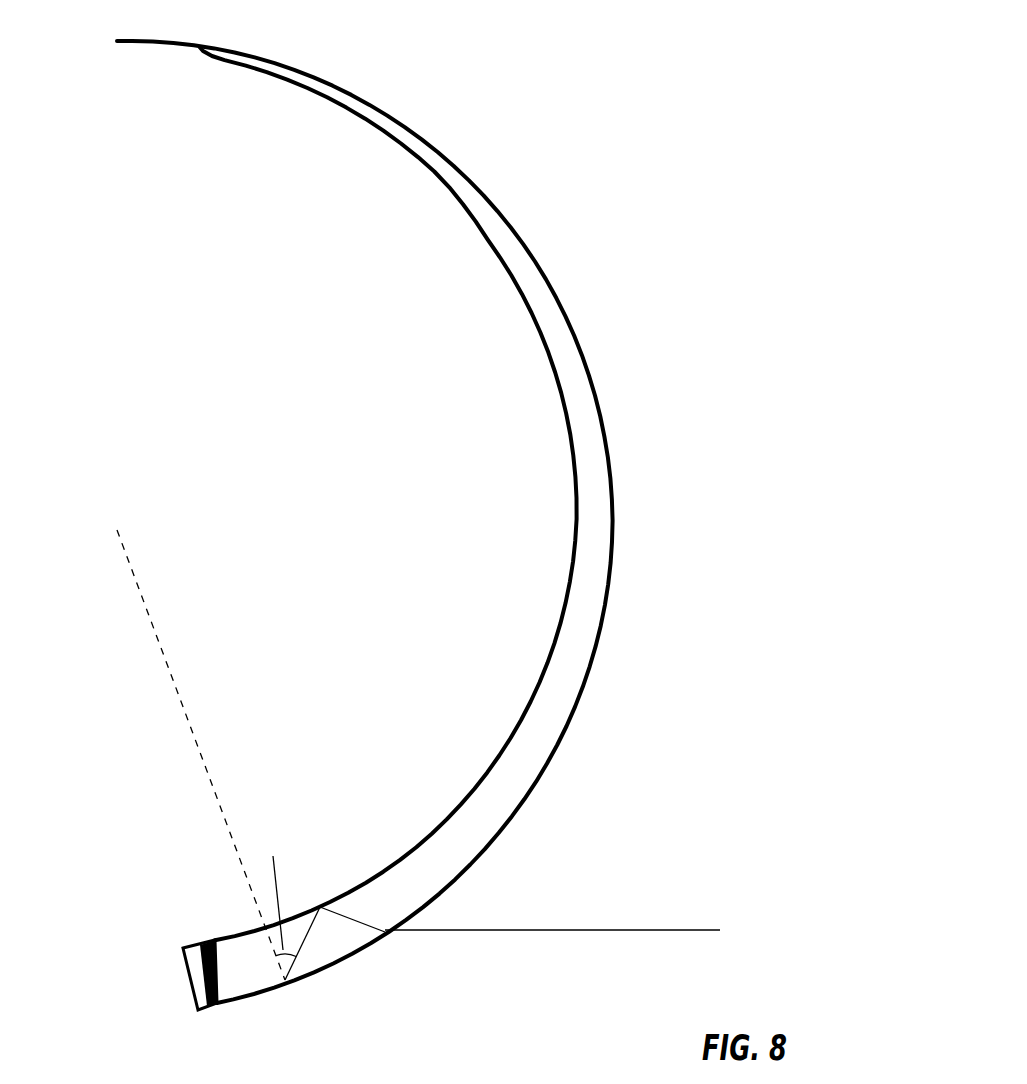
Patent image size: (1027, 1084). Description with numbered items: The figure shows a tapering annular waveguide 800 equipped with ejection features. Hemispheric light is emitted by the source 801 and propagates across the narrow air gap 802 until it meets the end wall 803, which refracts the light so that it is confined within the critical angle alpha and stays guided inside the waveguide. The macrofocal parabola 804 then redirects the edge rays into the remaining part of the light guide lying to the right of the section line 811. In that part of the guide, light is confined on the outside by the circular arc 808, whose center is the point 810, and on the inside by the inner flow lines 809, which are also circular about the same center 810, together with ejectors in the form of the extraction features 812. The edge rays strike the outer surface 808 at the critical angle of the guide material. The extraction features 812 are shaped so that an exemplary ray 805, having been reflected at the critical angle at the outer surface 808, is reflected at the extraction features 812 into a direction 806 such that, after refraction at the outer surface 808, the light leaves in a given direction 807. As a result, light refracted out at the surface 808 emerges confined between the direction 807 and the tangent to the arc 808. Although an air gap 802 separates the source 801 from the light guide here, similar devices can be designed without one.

The tapering annular waveguide 800 is at (630, 178).
The source 801 is at (185, 979).
The narrow air gap 802 is at (198, 943).
The end wall 803 is at (210, 962).
The macrofocal parabola 804 is at (257, 1005).
The exemplary ray 805 is at (303, 942).
The direction 806 is at (357, 913).
The given direction 807 is at (663, 925).
The circular arc 808 is at (545, 778).
The inner flow lines 809 is at (530, 698).
The center 810 is at (117, 530).
The section line 811 is at (201, 755).
The extraction features 812 is at (455, 805).